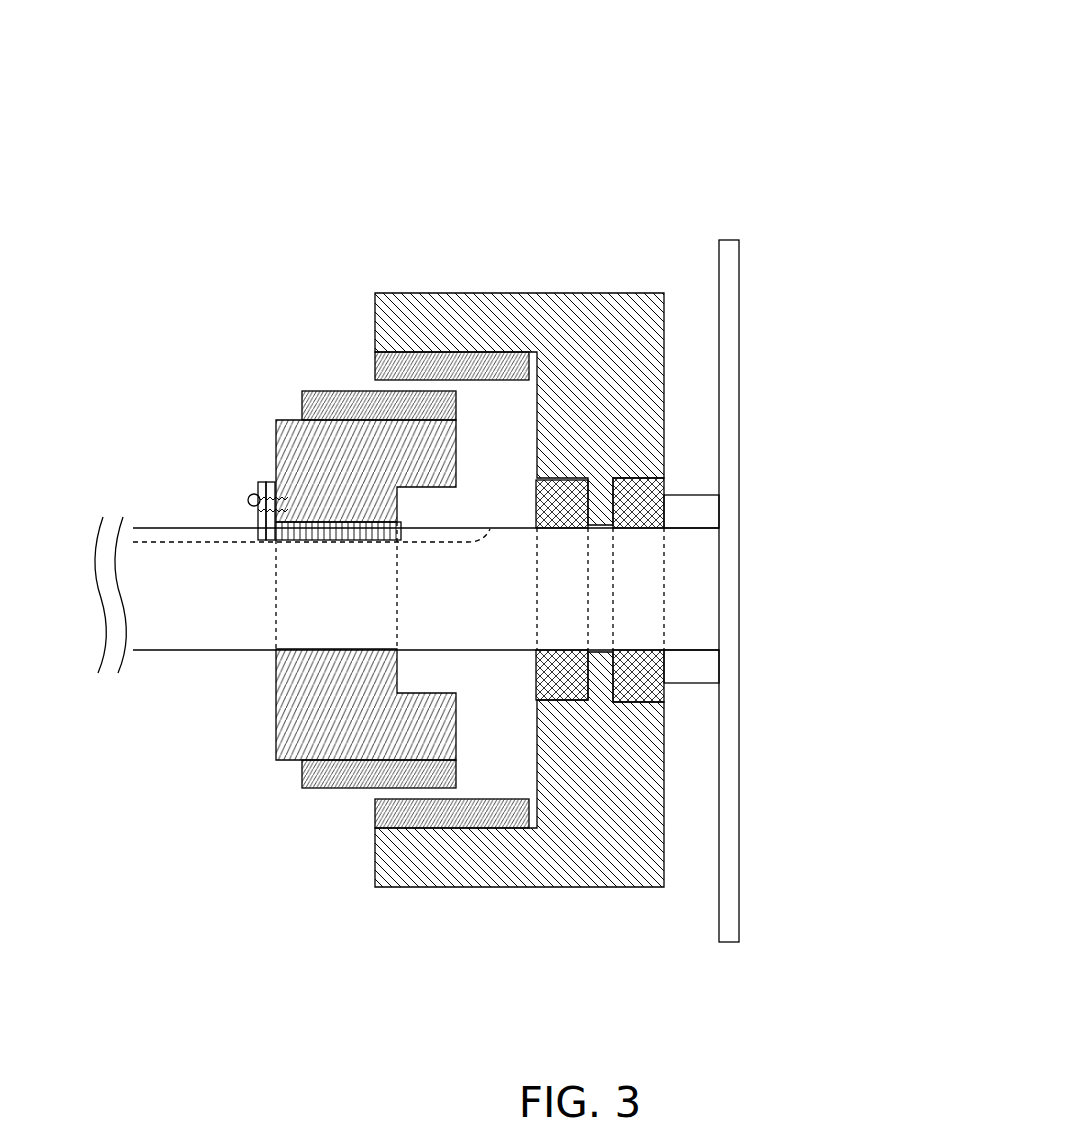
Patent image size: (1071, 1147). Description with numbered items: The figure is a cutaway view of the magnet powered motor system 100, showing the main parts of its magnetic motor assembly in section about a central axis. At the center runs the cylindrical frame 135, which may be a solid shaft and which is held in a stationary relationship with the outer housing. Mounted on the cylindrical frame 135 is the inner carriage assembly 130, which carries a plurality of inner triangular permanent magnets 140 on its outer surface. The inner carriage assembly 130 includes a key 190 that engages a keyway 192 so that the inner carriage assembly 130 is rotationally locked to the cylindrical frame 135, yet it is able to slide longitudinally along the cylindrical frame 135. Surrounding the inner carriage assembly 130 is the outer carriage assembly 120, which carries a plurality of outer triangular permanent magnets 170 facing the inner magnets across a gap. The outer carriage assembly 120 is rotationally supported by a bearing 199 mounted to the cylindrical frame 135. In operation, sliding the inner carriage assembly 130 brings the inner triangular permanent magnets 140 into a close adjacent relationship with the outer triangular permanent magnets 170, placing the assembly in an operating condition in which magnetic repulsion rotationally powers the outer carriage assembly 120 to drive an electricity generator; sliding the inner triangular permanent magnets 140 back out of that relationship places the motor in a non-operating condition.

The magnet powered motor system 100 is at (619, 127).
The outer carriage assembly 120 is at (542, 292).
The inner carriage assembly 130 is at (277, 417).
The cylindrical frame 135 is at (182, 526).
The inner triangular permanent magnets 140 is at (347, 388).
The outer triangular permanent magnets 170 is at (369, 357).
The key 190 is at (258, 477).
The keyway 192 is at (218, 546).
The bearing 199 is at (669, 481).